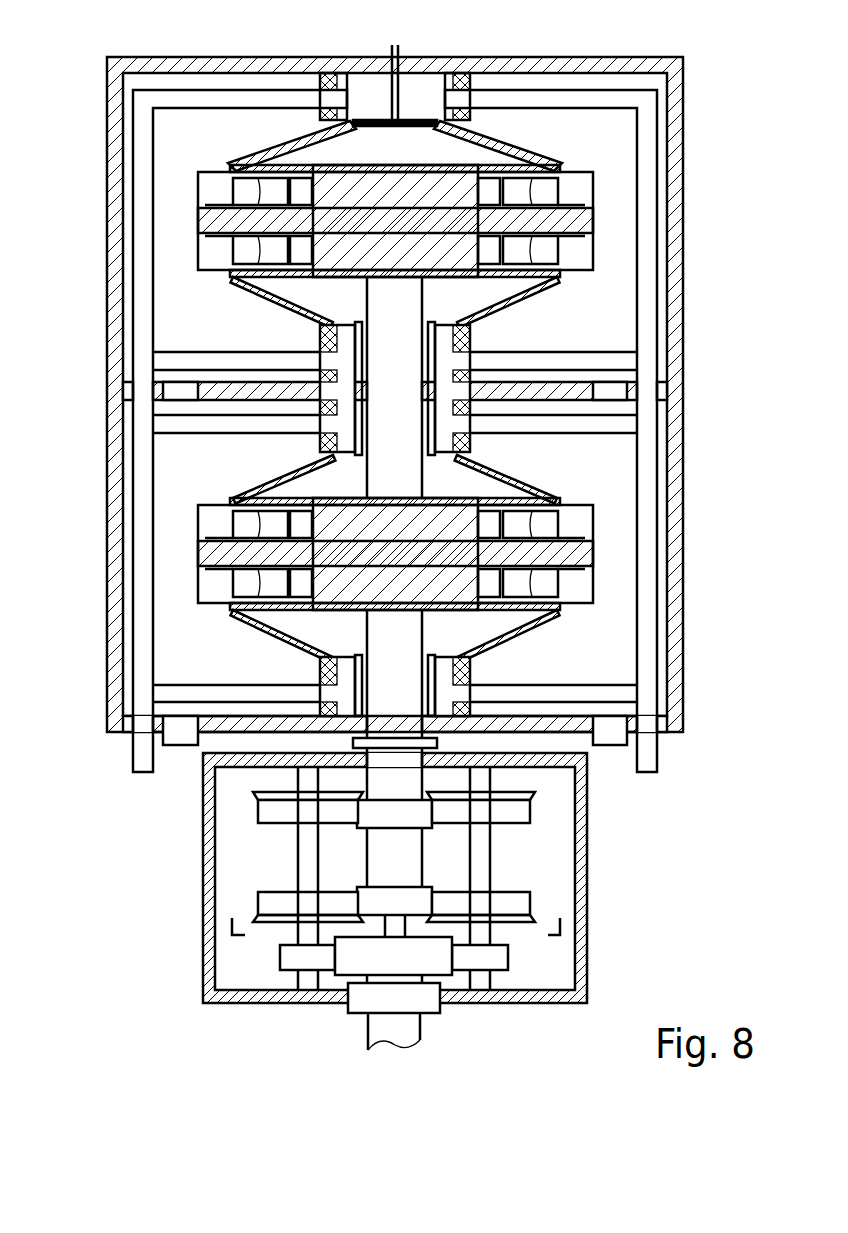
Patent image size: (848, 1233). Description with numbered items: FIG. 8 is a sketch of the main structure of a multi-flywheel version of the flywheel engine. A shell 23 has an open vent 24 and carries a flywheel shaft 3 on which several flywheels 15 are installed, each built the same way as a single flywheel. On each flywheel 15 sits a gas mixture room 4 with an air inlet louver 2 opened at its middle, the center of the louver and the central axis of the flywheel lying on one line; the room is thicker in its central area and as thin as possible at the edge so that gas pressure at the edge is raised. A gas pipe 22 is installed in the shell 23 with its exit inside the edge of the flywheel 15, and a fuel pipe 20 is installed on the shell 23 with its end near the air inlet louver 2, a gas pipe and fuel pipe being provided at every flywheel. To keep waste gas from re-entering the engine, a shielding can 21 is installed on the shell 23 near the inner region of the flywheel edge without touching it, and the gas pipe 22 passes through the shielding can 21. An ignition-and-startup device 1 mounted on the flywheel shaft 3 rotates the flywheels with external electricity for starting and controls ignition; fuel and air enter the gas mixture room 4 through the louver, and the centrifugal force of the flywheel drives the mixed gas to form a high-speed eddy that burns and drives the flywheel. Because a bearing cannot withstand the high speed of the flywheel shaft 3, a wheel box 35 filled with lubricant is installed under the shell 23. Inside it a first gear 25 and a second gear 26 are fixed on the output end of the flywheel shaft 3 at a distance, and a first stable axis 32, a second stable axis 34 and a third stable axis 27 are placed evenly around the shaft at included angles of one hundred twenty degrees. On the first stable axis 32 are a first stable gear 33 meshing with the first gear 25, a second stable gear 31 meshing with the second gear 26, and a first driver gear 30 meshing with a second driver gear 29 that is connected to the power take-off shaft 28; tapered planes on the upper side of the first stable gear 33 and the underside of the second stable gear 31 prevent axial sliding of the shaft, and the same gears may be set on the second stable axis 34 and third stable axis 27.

The ignition-and-startup device 1 is at (435, 742).
The air inlet louver 2 is at (385, 118).
The flywheel shaft 3 is at (403, 708).
The gas mixture room 4 is at (340, 152).
The flywheel 15 is at (563, 222).
The fuel pipe 20 is at (399, 48).
The shielding can 21 is at (455, 75).
The gas pipe 22 is at (527, 98).
The shell 23 is at (632, 72).
The vent 24 is at (612, 733).
The first gear 25 is at (395, 815).
The second gear 26 is at (412, 902).
The third stable axis 27 is at (483, 853).
The power take-off shaft 28 is at (375, 1025).
The second driver gear 29 is at (365, 952).
The first driver gear 30 is at (298, 955).
The second stable gear 31 is at (295, 902).
The first stable axis 32 is at (308, 857).
The first stable gear 33 is at (288, 808).
The second stable axis 34 is at (397, 927).
The wheel box 35 is at (208, 855).